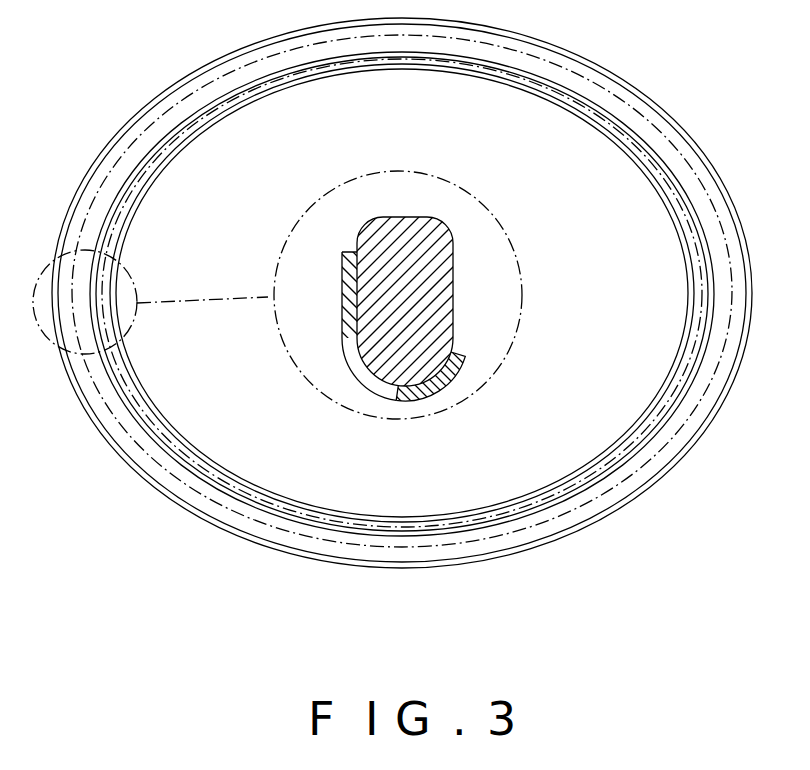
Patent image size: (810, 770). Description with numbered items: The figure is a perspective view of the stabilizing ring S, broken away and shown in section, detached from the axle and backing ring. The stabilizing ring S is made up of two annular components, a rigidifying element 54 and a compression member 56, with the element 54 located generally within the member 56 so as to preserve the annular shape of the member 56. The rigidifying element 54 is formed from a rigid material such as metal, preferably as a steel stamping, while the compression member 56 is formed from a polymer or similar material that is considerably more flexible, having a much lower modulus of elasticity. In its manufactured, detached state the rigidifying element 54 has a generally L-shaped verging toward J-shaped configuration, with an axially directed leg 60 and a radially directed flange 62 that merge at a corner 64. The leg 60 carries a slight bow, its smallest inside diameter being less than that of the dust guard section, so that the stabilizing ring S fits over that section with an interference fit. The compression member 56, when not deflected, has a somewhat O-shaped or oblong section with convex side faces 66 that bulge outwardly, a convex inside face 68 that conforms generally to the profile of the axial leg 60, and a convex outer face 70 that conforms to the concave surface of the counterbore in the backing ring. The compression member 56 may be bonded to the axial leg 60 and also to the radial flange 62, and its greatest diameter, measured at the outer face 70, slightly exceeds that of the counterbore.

The stabilizing ring S is at (672, 84).
The rigidifying element 54 is at (138, 413).
The compression member 56 is at (158, 468).
The axially directed leg 60 is at (413, 390).
The radially directed flange 62 is at (340, 270).
The corner 64 is at (362, 381).
The convex side faces 66 is at (453, 303).
The convex inside face 68 is at (397, 392).
The convex outer face 70 is at (402, 218).